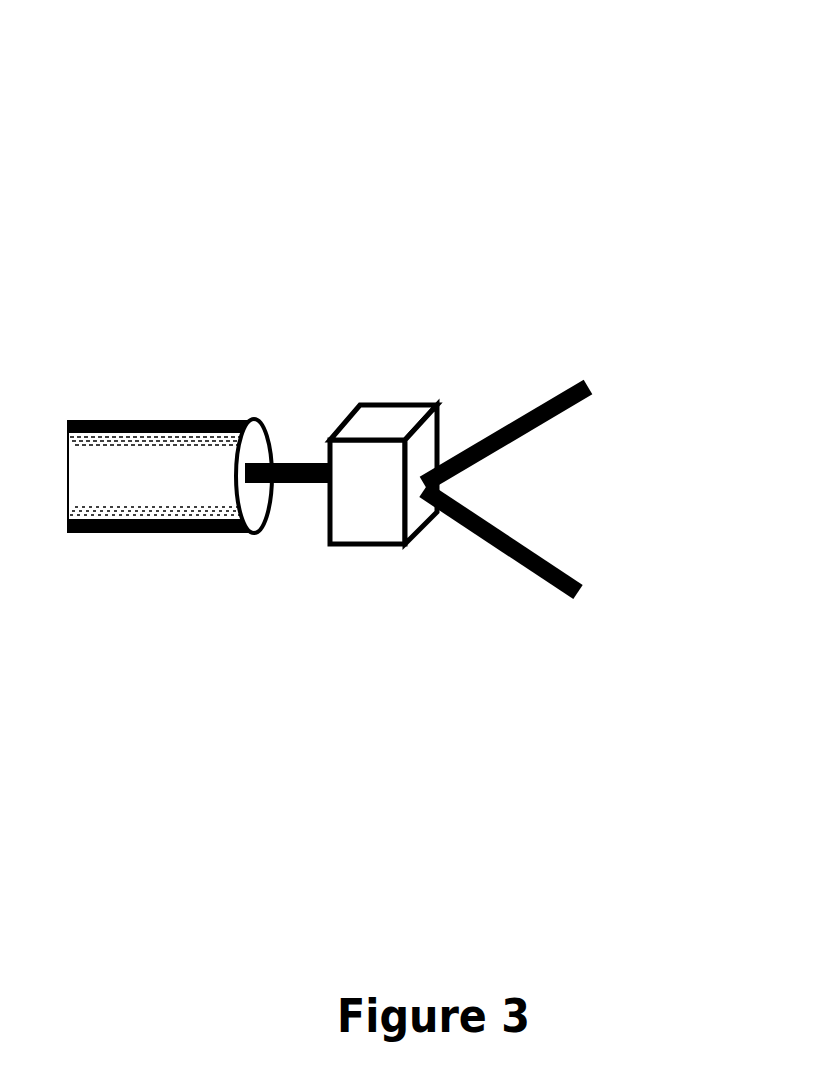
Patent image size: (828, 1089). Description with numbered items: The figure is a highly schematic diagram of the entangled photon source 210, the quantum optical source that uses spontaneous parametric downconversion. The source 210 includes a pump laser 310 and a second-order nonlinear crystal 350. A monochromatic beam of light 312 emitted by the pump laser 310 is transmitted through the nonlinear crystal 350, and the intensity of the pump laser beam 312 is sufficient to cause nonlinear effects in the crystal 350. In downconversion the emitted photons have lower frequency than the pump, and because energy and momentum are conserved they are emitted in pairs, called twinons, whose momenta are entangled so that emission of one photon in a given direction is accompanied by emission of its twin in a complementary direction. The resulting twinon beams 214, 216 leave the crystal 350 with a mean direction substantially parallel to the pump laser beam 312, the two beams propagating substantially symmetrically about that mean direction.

The entangled photon source 210 is at (115, 130).
The pump laser 310 is at (202, 412).
The pump laser beam 312 is at (287, 490).
The nonlinear crystal 350 is at (403, 406).
The twinon beam 216 is at (533, 400).
The twinon beam 214 is at (528, 573).